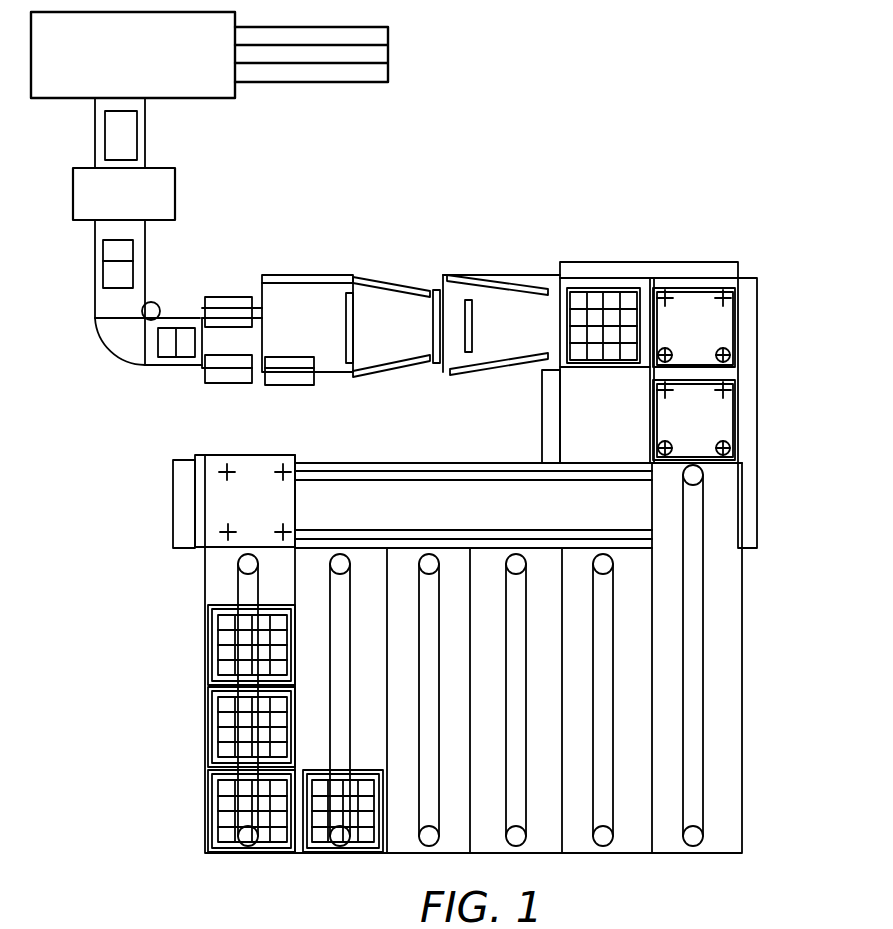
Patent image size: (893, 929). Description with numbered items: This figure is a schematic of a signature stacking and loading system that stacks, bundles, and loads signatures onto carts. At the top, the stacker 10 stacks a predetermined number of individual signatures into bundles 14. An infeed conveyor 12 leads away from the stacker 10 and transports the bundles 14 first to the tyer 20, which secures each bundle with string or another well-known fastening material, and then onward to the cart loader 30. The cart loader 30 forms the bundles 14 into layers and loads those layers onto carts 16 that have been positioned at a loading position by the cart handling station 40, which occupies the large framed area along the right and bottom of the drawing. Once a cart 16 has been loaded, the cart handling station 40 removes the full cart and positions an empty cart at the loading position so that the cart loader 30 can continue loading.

The stacker 10 is at (152, 72).
The infeed conveyor 12 is at (95, 282).
The bundles 14 is at (165, 358).
The carts 16 is at (620, 287).
The tyer 20 is at (167, 197).
The cart loader 30 is at (555, 257).
The cart handling station 40 is at (772, 253).